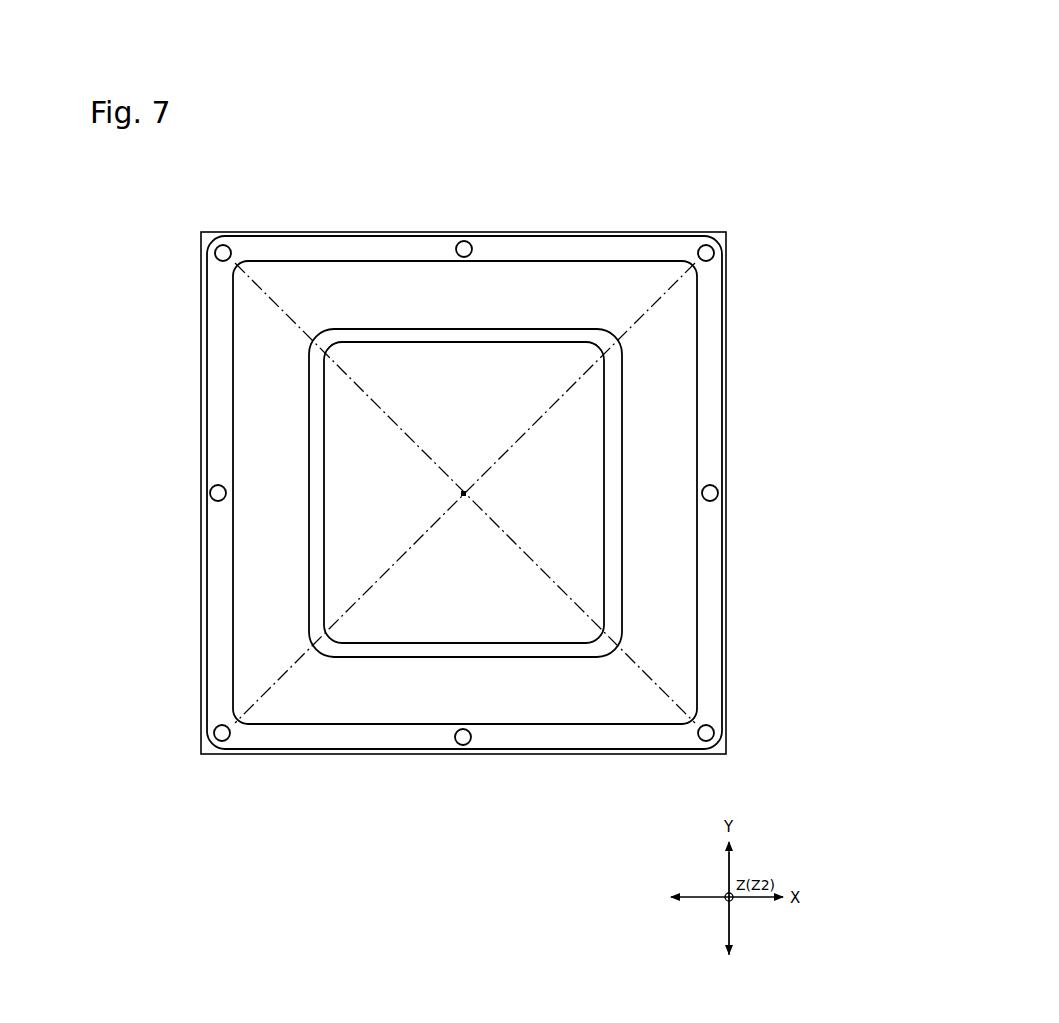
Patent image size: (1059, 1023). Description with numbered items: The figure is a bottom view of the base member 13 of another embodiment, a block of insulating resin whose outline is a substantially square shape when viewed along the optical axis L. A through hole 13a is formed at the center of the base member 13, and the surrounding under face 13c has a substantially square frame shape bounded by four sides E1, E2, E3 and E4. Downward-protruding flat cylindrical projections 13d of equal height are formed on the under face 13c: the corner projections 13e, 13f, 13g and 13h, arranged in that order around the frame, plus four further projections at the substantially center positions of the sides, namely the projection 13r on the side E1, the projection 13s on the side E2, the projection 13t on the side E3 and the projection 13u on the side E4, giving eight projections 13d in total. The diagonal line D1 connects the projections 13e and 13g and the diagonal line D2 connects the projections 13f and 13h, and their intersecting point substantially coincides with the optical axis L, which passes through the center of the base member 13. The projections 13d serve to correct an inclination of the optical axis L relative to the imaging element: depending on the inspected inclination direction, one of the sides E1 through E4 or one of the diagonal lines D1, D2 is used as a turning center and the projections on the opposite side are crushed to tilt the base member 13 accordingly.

The base member 13 is at (700, 181).
The through hole 13a is at (325, 498).
The under face 13c is at (713, 375).
The projection 13d is at (464, 493).
The projection 13u is at (462, 241).
The projection 13e is at (714, 253).
The projection 13h is at (214, 255).
The projection 13t is at (210, 494).
The projection 13r is at (718, 493).
The projection 13g is at (214, 734).
The projection 13s is at (463, 746).
The projection 13f is at (714, 733).
The side E1 is at (709, 606).
The side E2 is at (543, 741).
The side E3 is at (216, 607).
The side E4 is at (555, 247).
The diagonal line D1 is at (525, 432).
The diagonal line D2 is at (366, 393).
The optical axis L is at (462, 498).